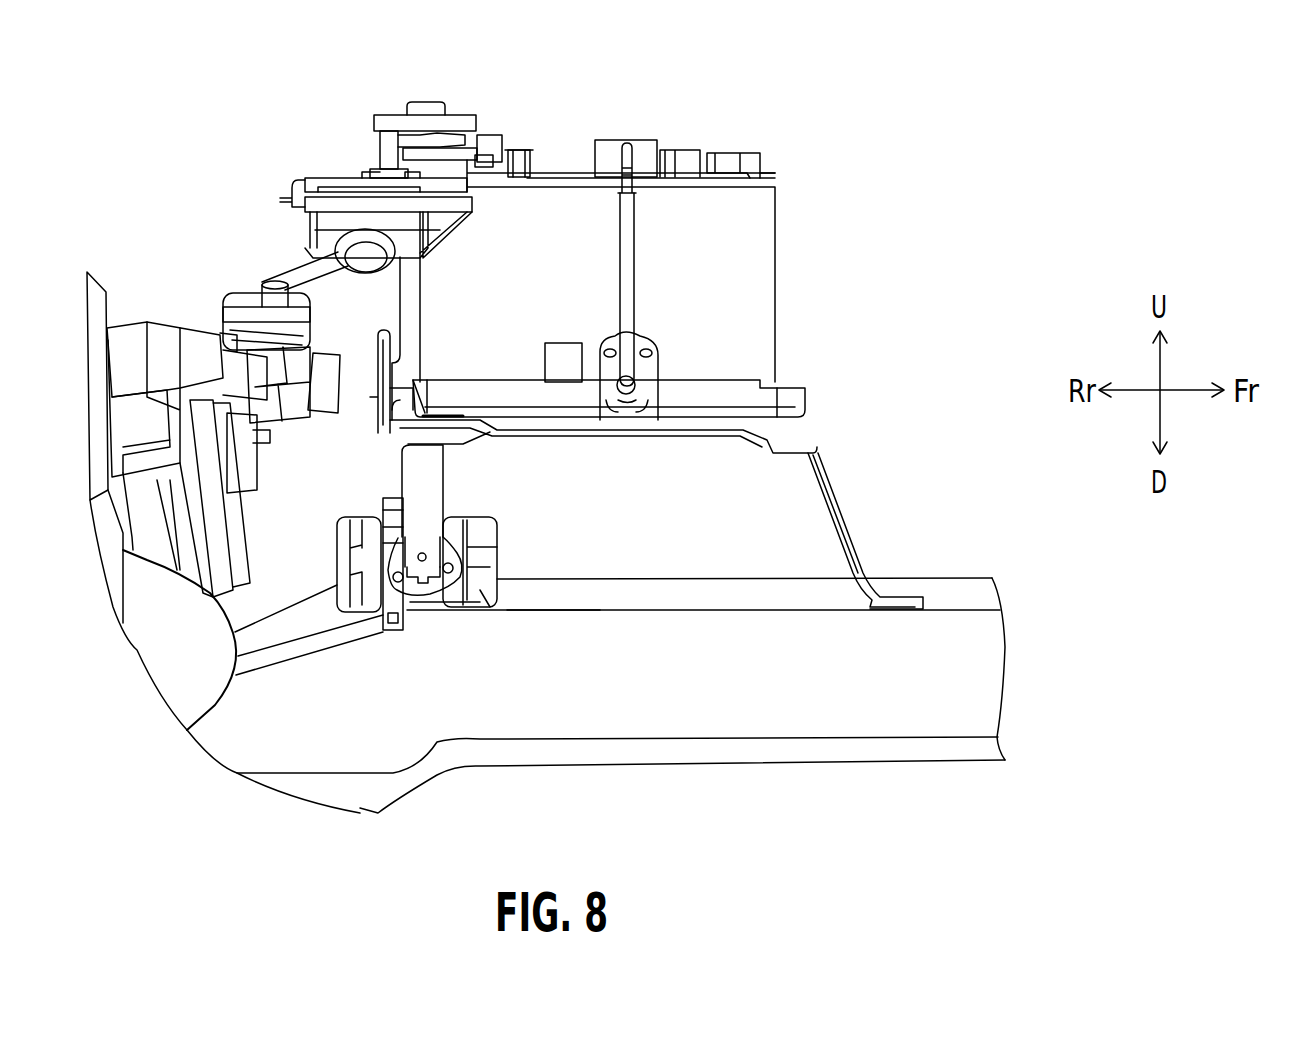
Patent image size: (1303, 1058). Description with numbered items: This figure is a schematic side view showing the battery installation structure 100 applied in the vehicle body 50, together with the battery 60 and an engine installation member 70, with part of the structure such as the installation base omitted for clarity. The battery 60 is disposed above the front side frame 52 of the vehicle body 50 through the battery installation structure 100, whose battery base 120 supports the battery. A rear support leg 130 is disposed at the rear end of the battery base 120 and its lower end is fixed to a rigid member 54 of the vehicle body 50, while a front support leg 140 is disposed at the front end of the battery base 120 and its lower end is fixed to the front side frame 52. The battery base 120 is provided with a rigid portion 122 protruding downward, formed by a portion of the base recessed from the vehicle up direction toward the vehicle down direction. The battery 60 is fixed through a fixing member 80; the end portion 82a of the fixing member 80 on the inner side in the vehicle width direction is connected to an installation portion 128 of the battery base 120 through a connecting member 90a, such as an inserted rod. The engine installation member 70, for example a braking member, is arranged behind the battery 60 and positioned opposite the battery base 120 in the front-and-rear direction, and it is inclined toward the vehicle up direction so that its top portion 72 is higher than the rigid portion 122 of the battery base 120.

The vehicle body 50 is at (948, 541).
The front side frame 52 is at (958, 585).
The rigid member 54 is at (493, 557).
The battery 60 is at (760, 287).
The engine installation member 70 is at (267, 367).
The top portion 72 is at (323, 340).
The fixing member 80 is at (607, 140).
The end portion 82a is at (636, 142).
The connecting member 90a is at (627, 233).
The battery installation structure 100 is at (911, 424).
The battery base 120 is at (793, 406).
The rigid portion 122 is at (561, 426).
The installation portion 128 is at (643, 382).
The rear support leg 130 is at (418, 481).
The front support leg 140 is at (857, 540).